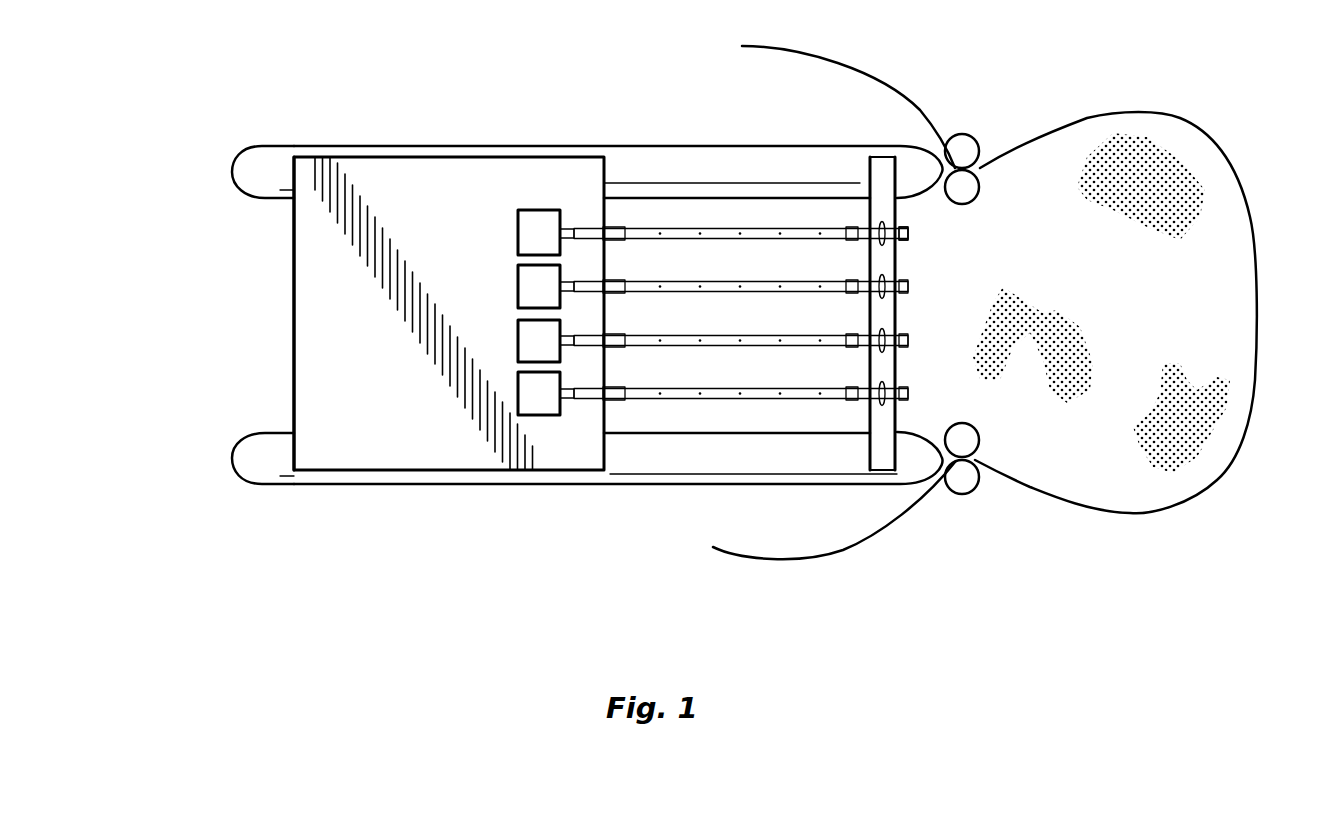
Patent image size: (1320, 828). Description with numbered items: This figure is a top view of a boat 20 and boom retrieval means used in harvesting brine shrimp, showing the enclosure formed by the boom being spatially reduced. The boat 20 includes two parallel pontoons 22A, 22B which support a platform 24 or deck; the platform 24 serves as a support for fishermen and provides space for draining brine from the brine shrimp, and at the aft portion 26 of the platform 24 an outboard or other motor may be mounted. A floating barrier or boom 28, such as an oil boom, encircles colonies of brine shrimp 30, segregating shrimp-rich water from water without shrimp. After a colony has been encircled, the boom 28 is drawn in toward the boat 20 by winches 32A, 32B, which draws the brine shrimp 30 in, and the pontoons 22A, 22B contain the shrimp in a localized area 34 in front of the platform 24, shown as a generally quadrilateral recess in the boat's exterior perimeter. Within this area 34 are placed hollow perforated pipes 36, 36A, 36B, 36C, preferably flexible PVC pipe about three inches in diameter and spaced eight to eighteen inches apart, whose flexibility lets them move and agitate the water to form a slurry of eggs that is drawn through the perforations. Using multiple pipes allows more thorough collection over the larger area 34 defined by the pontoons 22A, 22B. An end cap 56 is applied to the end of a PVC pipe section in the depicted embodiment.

The boat 20 is at (383, 552).
The pontoon 22A is at (700, 145).
The pontoon 22B is at (657, 484).
The platform 24 is at (449, 318).
The aft portion 26 is at (294, 261).
The boom 28 is at (1085, 513).
The brine shrimp 30 is at (1058, 312).
The winch 32A is at (963, 134).
The winch 32B is at (963, 496).
The localized area 34 is at (783, 313).
The hollow perforated pipe 36 is at (837, 239).
The perforated pipe 36A is at (808, 293).
The perforated pipe 36B is at (808, 347).
The perforated pipe 36C is at (808, 404).
The end cap 56 is at (912, 234).